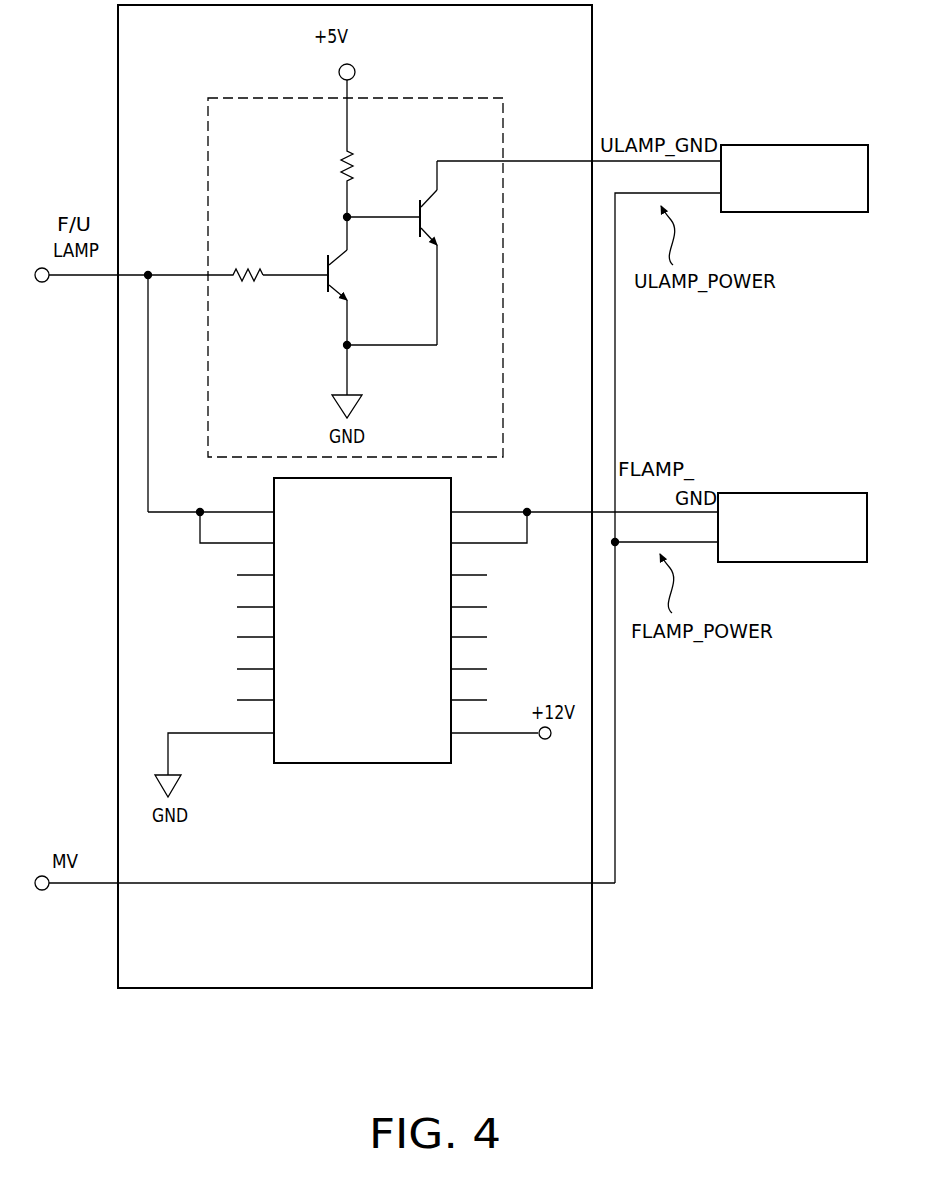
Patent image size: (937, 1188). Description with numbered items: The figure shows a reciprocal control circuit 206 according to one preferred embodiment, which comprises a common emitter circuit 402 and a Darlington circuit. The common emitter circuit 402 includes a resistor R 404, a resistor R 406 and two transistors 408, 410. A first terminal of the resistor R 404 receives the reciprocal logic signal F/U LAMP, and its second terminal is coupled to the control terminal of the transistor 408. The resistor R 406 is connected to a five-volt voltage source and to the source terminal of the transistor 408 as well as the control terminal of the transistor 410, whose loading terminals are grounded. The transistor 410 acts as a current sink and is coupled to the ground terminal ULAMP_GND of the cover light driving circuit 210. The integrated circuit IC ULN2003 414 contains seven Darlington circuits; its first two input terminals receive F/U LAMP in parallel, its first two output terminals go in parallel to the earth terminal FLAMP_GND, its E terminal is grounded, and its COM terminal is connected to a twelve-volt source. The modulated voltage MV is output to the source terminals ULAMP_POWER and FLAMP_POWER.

The reciprocal control circuit 206 is at (436, 990).
The cover light driving circuit 210 is at (793, 145).
The common emitter circuit 402 is at (505, 333).
The resistor R 404 is at (245, 288).
The resistor R 406 is at (338, 170).
The transistor 408 is at (338, 278).
The transistor 410 is at (432, 217).
The integrated circuit IC ULN2003 414 is at (347, 764).